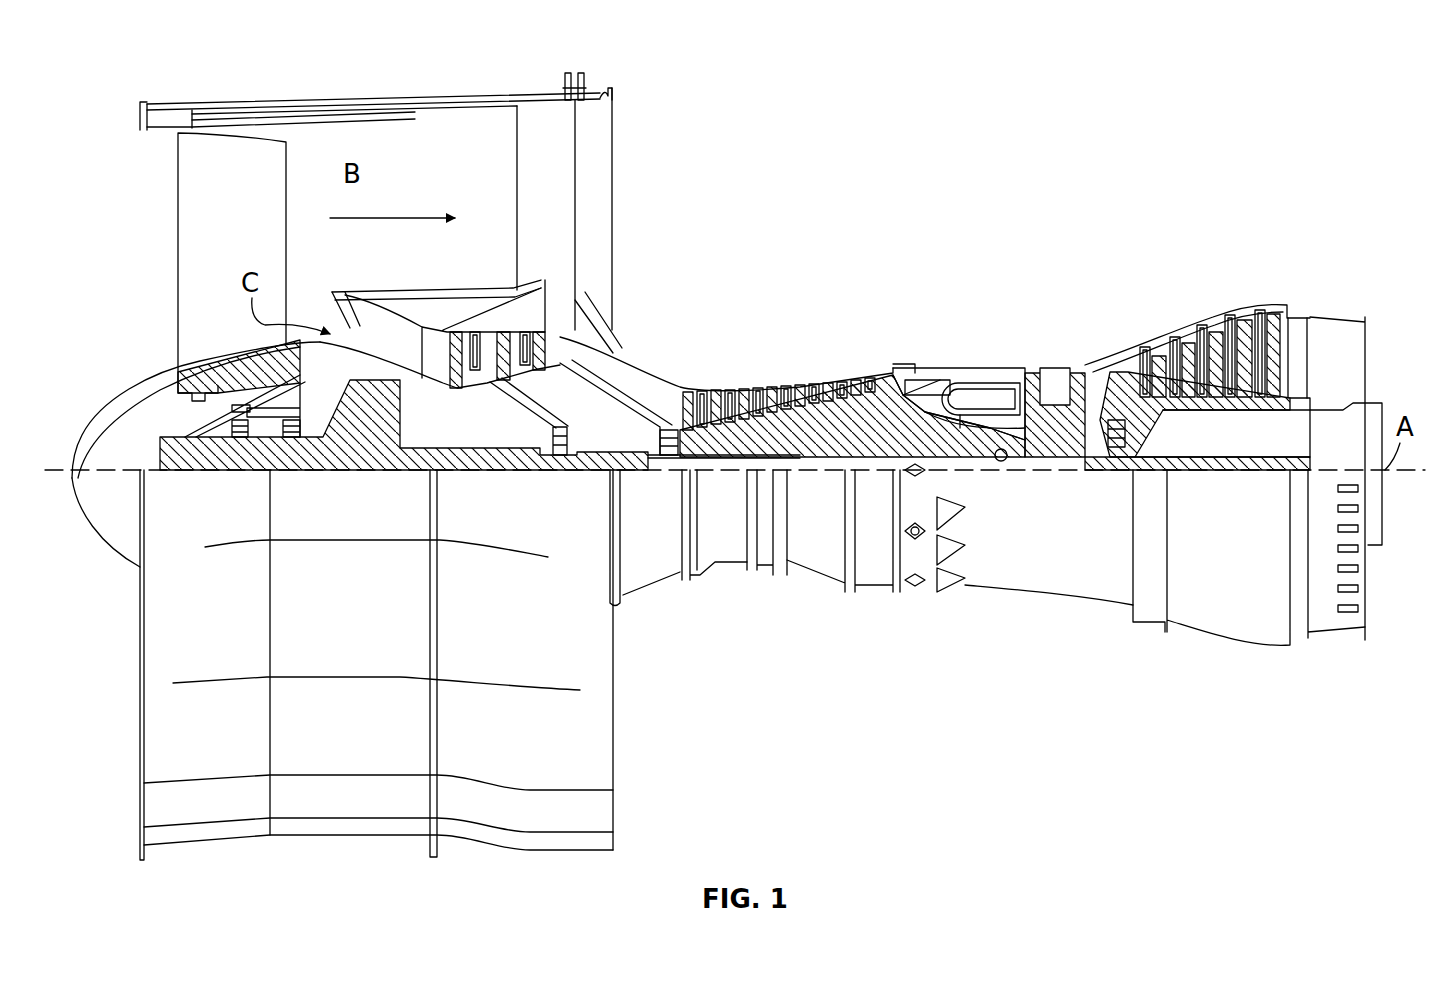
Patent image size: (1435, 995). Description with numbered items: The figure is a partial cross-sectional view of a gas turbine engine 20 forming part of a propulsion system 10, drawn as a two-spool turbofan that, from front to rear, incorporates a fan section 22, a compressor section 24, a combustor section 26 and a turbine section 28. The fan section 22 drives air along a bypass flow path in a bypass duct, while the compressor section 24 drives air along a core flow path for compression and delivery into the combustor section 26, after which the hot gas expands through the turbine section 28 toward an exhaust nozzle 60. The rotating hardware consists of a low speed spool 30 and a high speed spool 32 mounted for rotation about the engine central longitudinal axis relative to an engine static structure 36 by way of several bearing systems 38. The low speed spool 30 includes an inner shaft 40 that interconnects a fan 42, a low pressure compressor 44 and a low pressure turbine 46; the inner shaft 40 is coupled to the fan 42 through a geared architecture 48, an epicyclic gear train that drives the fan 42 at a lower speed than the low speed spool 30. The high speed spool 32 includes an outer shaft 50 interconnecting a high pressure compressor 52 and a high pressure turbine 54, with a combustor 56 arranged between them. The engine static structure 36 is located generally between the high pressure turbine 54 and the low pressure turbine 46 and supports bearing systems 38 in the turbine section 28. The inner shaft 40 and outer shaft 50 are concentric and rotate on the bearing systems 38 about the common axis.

The propulsion system 10 is at (303, 50).
The gas turbine engine 20 is at (1184, 142).
The fan section 22 is at (231, 88).
The compressor section 24 is at (806, 328).
The combustor section 26 is at (970, 328).
The turbine section 28 is at (1146, 298).
The low speed spool 30 is at (833, 478).
The high speed spool 32 is at (892, 405).
The engine static structure 36 is at (873, 596).
The bearing systems 38 is at (240, 440).
The inner shaft 40 is at (627, 465).
The fan 42 is at (376, 496).
The low pressure compressor 44 is at (515, 333).
The low pressure turbine 46 is at (1218, 330).
The geared architecture 48 is at (380, 432).
The outer shaft 50 is at (1002, 458).
The high pressure compressor 52 is at (796, 440).
The high pressure turbine 54 is at (1053, 366).
The combustor 56 is at (978, 388).
The exhaust nozzle 60 is at (1338, 328).